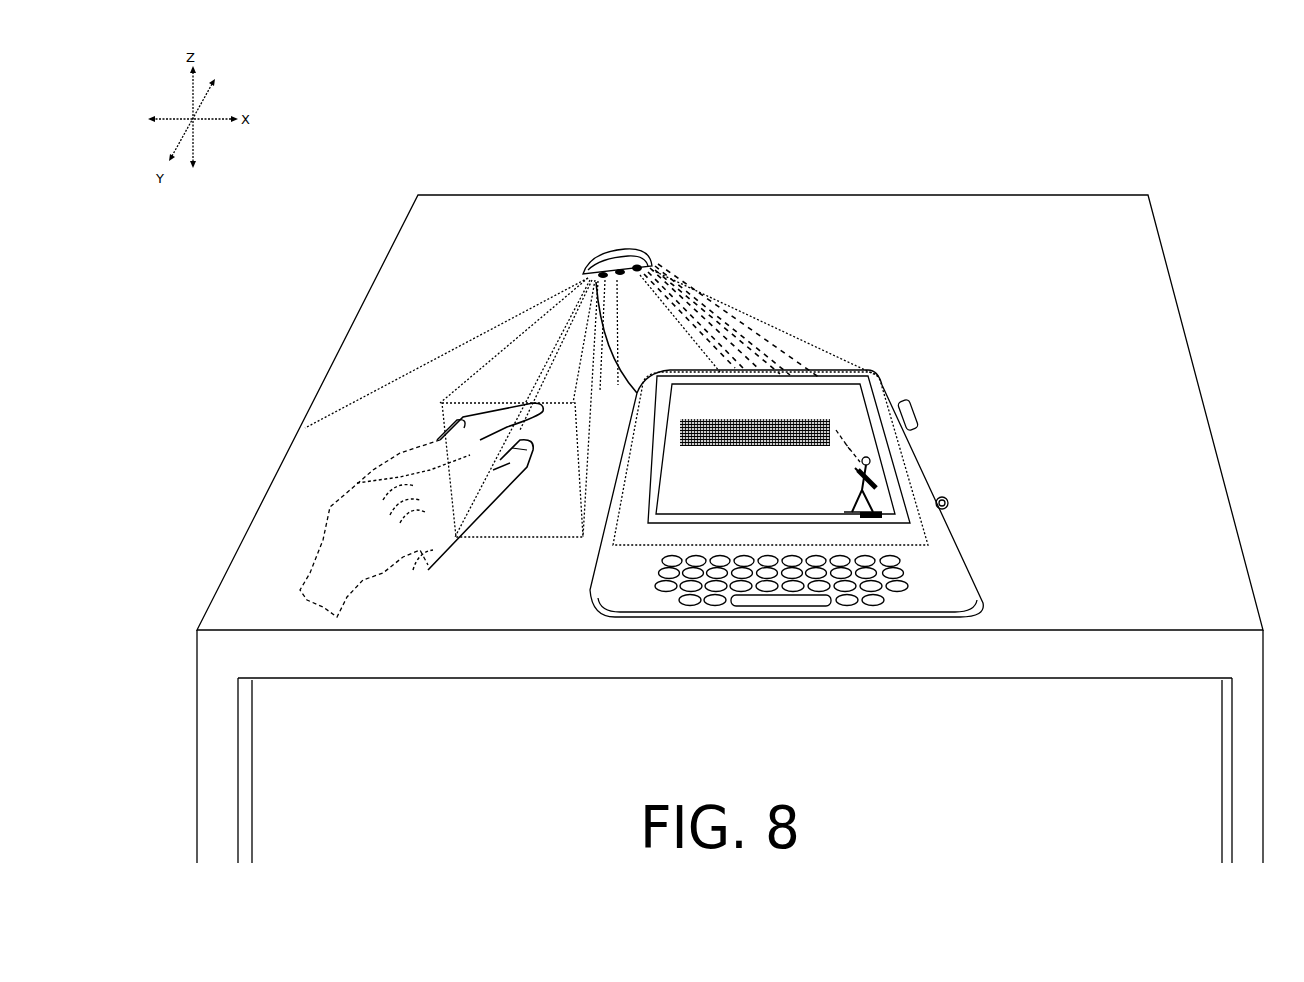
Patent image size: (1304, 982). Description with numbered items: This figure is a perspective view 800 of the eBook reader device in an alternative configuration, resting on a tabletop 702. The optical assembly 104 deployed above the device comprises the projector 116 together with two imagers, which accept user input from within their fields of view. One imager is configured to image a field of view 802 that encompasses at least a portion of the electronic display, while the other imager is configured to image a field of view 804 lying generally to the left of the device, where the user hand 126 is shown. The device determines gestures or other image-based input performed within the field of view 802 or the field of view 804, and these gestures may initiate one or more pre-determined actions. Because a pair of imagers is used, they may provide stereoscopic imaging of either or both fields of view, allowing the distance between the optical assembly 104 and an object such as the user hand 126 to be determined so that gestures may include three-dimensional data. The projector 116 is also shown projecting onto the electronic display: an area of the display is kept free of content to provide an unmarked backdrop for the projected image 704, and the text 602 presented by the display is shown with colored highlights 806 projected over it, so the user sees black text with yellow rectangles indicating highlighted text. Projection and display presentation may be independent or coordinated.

The perspective view 800 is at (1223, 88).
The tabletop 702 is at (1108, 256).
The field of view 802 is at (888, 480).
The text 602 is at (688, 506).
The colored highlights 806 is at (832, 412).
The image 704 is at (883, 486).
The optical assembly 104 is at (579, 276).
The projector 116 is at (627, 256).
The field of view 804 is at (438, 413).
The user hand 126 is at (343, 538).